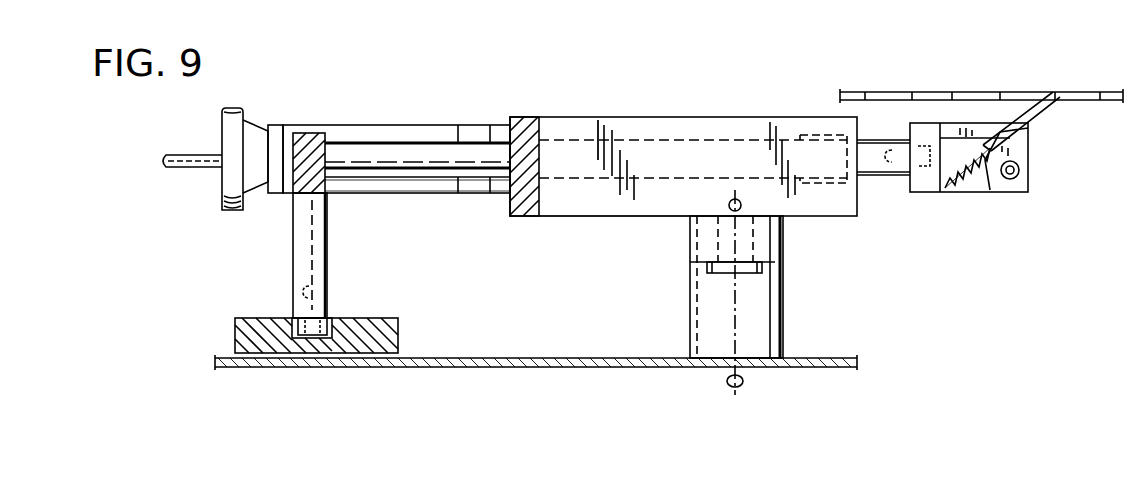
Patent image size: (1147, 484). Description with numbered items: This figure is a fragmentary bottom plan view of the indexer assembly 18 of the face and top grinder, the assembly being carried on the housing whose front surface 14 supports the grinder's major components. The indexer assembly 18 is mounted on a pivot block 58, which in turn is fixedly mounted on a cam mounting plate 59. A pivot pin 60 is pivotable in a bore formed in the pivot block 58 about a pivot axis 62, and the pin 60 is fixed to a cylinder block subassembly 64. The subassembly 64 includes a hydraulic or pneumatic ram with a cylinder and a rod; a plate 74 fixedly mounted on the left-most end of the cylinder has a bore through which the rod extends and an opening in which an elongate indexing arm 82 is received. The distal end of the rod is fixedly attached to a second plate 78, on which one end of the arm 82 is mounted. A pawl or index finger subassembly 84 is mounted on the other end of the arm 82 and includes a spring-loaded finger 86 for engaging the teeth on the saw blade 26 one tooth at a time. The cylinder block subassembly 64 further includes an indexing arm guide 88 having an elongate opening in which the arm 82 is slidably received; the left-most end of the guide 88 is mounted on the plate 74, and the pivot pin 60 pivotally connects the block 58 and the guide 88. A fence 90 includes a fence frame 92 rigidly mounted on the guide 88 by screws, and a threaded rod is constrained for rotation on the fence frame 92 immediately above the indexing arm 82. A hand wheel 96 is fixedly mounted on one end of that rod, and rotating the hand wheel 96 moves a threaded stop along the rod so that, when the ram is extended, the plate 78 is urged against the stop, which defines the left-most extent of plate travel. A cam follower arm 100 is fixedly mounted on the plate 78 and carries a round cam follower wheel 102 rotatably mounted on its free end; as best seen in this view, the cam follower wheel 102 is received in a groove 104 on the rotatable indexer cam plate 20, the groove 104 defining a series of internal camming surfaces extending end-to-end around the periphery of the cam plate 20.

The front surface 14 is at (507, 357).
The indexer assembly 18 is at (590, 260).
The rotatable indexer cam plate 20 is at (236, 325).
The saw blade 26 is at (916, 92).
The pivot block 58 is at (784, 308).
The cam mounting plate 59 is at (661, 358).
The pivot pin 60 is at (745, 273).
The pivot axis 62 is at (744, 381).
The cylinder block subassembly 64 is at (612, 118).
The plate 74 is at (518, 118).
The second plate 78 is at (306, 133).
The elongate indexing arm 82 is at (400, 150).
The pawl or index finger subassembly 84 is at (977, 192).
The spring-loaded finger 86 is at (1043, 112).
The indexing arm guide 88 is at (676, 117).
The fence 90 is at (382, 193).
The fence frame 92 is at (430, 193).
The hand wheel 96 is at (238, 108).
The cam follower arm 100 is at (328, 270).
The cam follower wheel 102 is at (334, 322).
The groove 104 is at (293, 322).